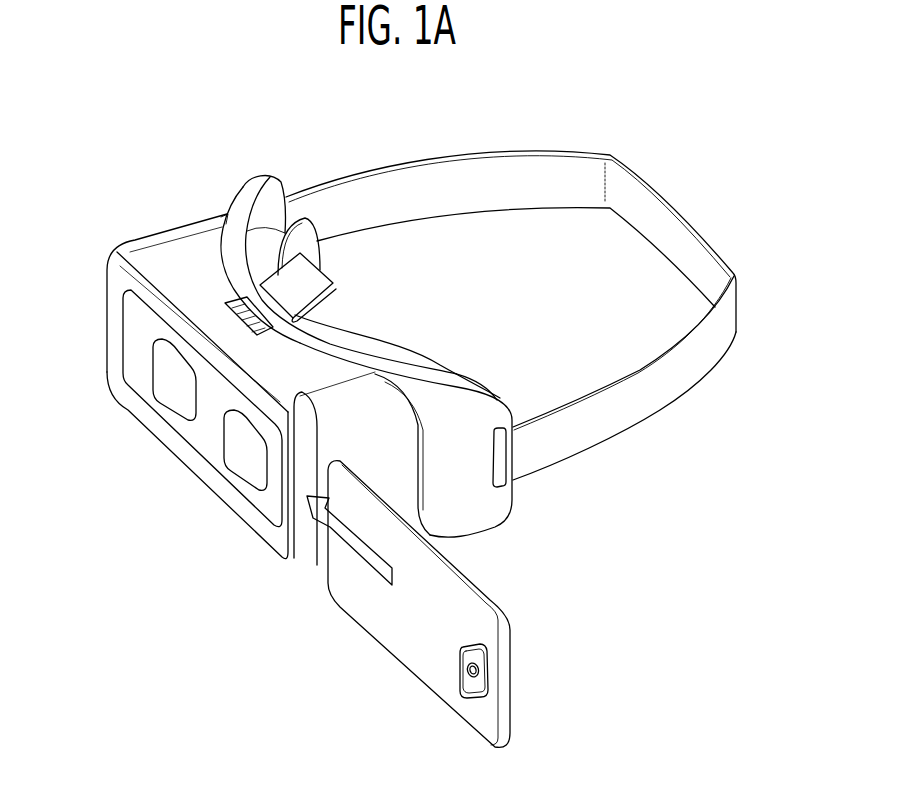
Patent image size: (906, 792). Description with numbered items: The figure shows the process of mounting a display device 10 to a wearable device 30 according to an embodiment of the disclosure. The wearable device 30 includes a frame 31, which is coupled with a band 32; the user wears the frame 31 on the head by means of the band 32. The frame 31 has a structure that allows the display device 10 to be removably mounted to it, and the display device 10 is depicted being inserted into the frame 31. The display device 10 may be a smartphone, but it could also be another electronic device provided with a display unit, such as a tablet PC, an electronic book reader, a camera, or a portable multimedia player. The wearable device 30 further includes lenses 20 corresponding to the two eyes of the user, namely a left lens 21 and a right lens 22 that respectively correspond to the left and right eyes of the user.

The display device 10 is at (403, 651).
The lenses 20 is at (157, 541).
The left lens 21 is at (248, 467).
The right lens 22 is at (177, 400).
The wearable device 30 is at (494, 273).
The frame 31 is at (172, 232).
The band 32 is at (716, 341).